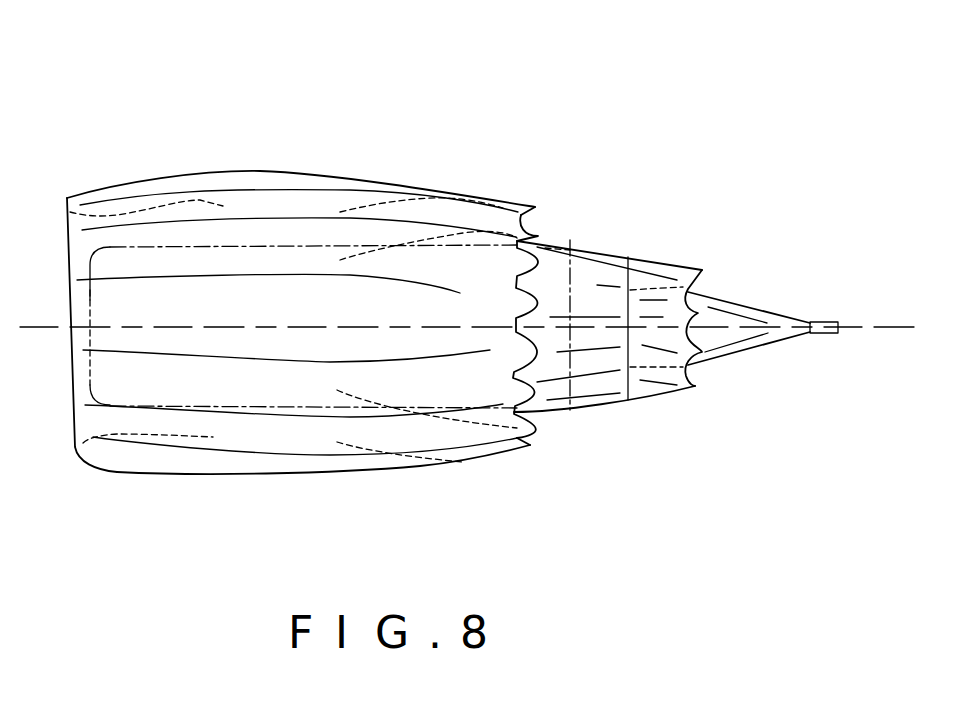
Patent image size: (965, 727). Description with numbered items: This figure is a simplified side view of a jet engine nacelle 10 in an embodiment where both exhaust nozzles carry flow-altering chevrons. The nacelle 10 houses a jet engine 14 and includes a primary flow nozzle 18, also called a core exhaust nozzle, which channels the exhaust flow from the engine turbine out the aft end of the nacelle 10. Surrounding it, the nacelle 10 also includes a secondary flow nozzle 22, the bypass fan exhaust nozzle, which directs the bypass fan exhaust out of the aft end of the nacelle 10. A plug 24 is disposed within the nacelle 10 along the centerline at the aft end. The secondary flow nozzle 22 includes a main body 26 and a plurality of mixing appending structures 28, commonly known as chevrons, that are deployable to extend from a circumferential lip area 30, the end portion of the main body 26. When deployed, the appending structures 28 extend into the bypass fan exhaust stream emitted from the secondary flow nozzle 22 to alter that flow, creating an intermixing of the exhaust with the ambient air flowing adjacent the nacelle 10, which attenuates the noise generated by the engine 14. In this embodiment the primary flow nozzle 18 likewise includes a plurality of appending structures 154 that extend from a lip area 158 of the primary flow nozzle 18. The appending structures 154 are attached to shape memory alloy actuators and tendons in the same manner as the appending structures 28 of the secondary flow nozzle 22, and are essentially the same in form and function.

The nacelle 10 is at (663, 98).
The jet engine 14 is at (172, 243).
The primary flow nozzle 18 is at (616, 405).
The secondary flow nozzle 22 is at (240, 165).
The plug 24 is at (766, 322).
The main body 26 is at (437, 220).
The appending structures 28 is at (538, 236).
The circumferential lip area 30 is at (487, 443).
The appending structures 154 is at (732, 300).
The lip area 158 is at (677, 278).